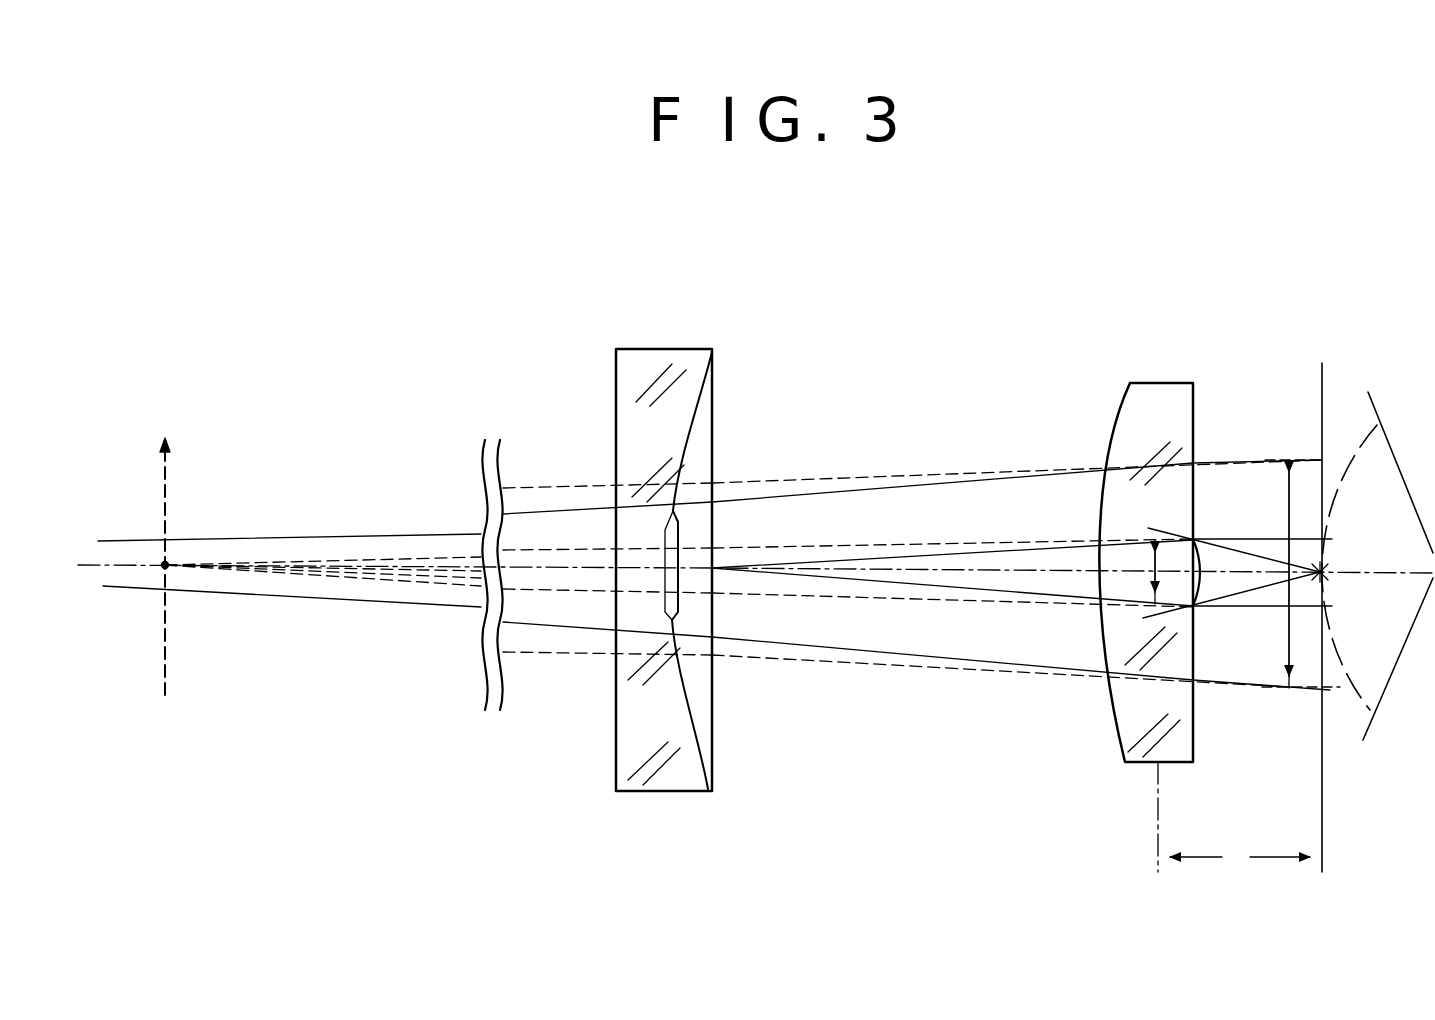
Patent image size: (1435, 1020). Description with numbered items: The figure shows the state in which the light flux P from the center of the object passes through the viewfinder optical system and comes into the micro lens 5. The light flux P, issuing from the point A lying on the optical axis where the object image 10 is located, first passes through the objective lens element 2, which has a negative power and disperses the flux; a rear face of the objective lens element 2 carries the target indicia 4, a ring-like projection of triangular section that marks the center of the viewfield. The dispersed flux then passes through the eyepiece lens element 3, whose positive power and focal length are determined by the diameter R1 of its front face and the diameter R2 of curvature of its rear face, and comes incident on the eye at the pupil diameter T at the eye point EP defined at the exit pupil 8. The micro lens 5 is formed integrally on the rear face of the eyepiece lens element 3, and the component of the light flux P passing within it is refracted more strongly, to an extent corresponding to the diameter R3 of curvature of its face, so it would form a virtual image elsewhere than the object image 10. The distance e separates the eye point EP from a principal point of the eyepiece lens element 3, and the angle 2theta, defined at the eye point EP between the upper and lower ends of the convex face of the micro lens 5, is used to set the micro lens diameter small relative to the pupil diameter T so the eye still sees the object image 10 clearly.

The objective lens element 2 is at (660, 792).
The eyepiece lens element 3 is at (1120, 741).
The target indicia 4 is at (679, 614).
The micro lens 5 is at (1205, 562).
The exit pupil 8 is at (1322, 403).
The object image 10 is at (165, 655).
The point A is at (166, 562).
The light flux P is at (332, 538).
The eye point EP is at (1332, 568).
The diameter of front face R1 is at (1183, 431).
The diameter of curvature of rear face R2 is at (1196, 723).
The diameter of curvature of micro lens face R3 is at (1247, 584).
The pupil diameter T is at (1301, 574).
The distance e is at (1234, 817).
The angle 2theta is at (1152, 577).